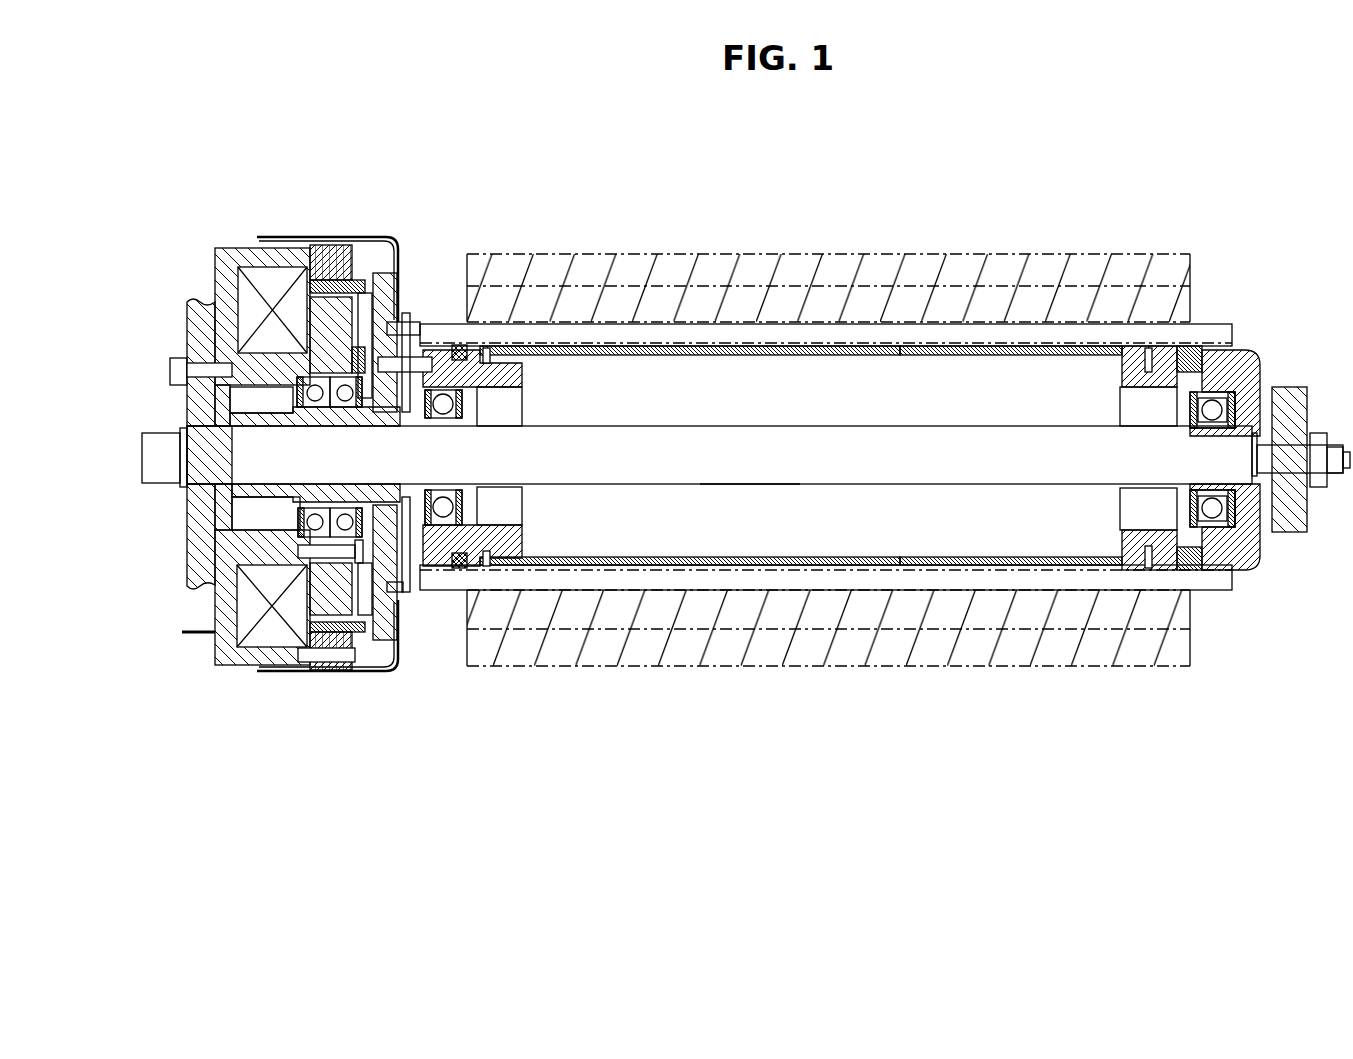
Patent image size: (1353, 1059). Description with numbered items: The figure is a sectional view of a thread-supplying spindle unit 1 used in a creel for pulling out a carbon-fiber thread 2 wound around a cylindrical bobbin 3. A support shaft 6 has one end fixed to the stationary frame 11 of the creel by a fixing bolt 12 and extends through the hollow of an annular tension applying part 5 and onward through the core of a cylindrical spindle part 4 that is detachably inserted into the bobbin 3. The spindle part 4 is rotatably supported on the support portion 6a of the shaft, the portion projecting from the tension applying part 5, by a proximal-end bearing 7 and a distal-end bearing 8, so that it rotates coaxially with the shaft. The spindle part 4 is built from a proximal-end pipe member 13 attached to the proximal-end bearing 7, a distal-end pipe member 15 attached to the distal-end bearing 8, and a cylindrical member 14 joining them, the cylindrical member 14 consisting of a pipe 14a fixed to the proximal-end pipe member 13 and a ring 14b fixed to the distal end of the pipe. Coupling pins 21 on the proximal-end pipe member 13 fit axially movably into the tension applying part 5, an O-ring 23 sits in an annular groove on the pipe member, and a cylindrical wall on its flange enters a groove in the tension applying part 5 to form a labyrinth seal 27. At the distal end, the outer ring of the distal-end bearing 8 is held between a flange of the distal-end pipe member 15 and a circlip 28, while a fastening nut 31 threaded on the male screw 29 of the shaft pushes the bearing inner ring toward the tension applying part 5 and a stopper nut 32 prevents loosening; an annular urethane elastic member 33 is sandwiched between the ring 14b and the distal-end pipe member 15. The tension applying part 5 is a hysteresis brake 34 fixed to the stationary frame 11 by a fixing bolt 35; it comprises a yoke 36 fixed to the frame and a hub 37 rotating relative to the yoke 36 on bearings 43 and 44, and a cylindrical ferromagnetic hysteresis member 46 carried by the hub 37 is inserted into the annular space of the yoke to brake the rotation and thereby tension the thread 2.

The spindle unit 1 is at (1183, 142).
The thread 2 is at (638, 253).
The bobbin 3 is at (704, 290).
The spindle part 4 is at (782, 340).
The tension applying part 5 is at (360, 176).
The support shaft 6 is at (850, 424).
The support portion 6a is at (744, 452).
The proximal-end bearing 7 is at (450, 410).
The distal-end bearing 8 is at (1211, 512).
The stationary frame 11 is at (206, 302).
The fixing bolt 12 is at (162, 487).
The proximal-end pipe member 13 is at (545, 348).
The cylindrical member 14 is at (1038, 361).
The pipe 14a is at (1000, 346).
The ring 14b is at (1127, 348).
The distal-end pipe member 15 is at (1233, 350).
The coupling pins 21 is at (408, 314).
The O-ring 23 is at (459, 344).
The labyrinth seal 27 is at (413, 598).
The circlip 28 is at (1256, 572).
The male screw 29 is at (1292, 452).
The fastening nut 31 is at (1298, 534).
The stopper nut 32 is at (1320, 436).
The elastic member 33 is at (1190, 347).
The hysteresis brake 34 is at (212, 665).
The fixing bolt 35 is at (178, 358).
The yoke 36 is at (236, 670).
The hub 37 is at (387, 656).
The bearing 43 is at (316, 516).
The bearing 44 is at (345, 516).
The hysteresis member 46 is at (367, 634).